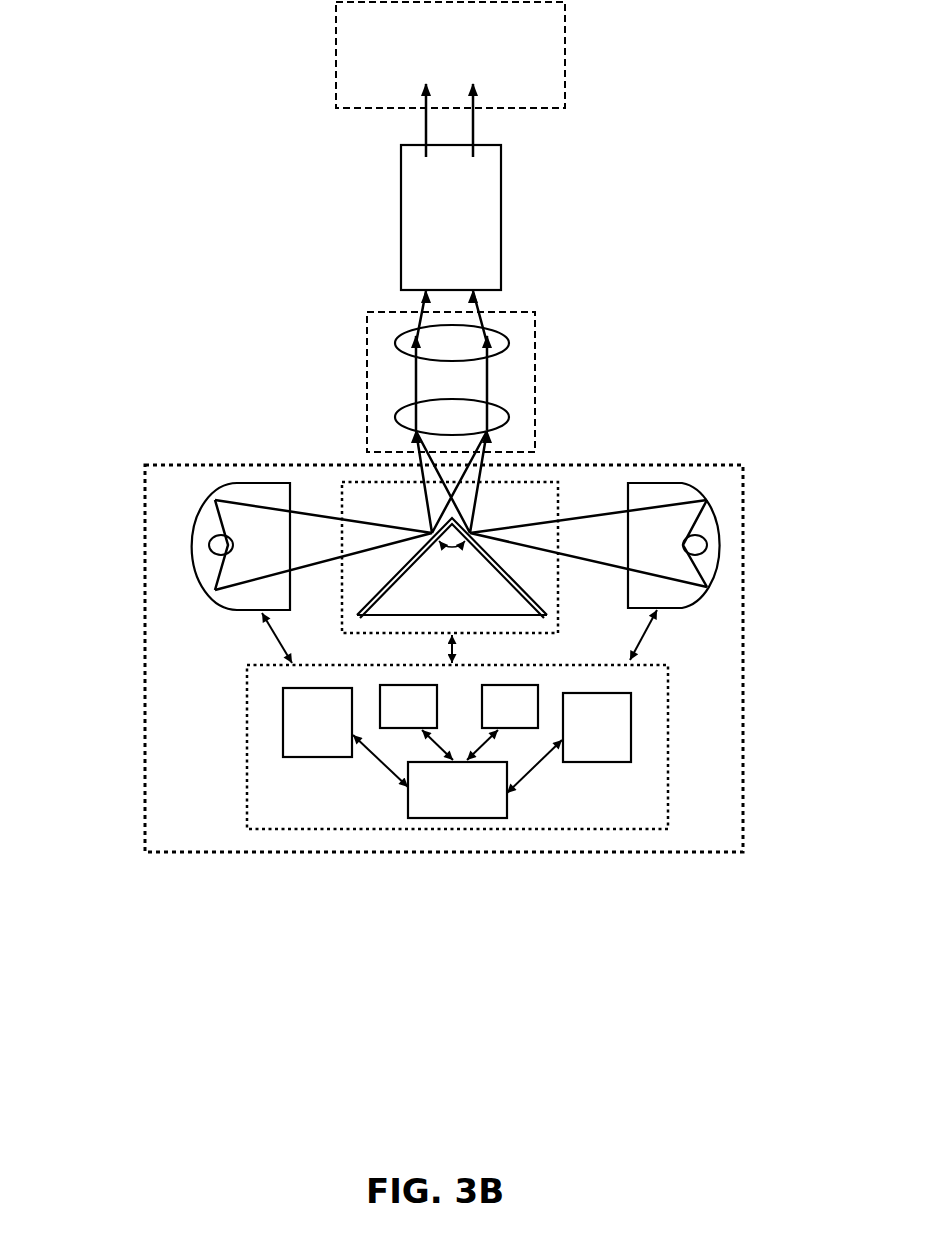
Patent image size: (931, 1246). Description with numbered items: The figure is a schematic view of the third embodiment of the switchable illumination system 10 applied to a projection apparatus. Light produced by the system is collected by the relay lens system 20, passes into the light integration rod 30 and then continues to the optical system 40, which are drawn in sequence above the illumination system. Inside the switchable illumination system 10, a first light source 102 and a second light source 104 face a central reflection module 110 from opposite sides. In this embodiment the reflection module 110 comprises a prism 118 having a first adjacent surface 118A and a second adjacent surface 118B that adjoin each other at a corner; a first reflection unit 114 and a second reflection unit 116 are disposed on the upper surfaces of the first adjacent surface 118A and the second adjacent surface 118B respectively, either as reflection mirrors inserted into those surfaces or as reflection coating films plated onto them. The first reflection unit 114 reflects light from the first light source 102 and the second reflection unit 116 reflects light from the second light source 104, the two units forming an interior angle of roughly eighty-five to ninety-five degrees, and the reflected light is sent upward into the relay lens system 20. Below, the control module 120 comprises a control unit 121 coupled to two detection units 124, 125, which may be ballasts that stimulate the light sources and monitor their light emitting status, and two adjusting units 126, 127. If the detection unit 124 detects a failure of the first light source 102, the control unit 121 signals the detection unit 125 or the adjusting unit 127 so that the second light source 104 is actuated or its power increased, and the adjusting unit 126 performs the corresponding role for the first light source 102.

The optical system 40 is at (337, 32).
The light integration rod 30 is at (400, 180).
The relay lens system 20 is at (367, 355).
The switchable illumination system 10 is at (145, 492).
The first light source 102 is at (195, 569).
The second light source 104 is at (723, 567).
The reflection module 110 is at (340, 611).
The first reflection unit 114 is at (358, 615).
The second reflection unit 116 is at (545, 615).
The prism 118 is at (537, 615).
The first adjacent surface 118A is at (387, 590).
The second adjacent surface 118B is at (520, 597).
The control module 120 is at (247, 822).
The control unit 121 is at (448, 812).
The detection unit 124 is at (303, 745).
The detection unit 125 is at (613, 752).
The adjusting unit 126 is at (388, 709).
The adjusting unit 127 is at (538, 707).